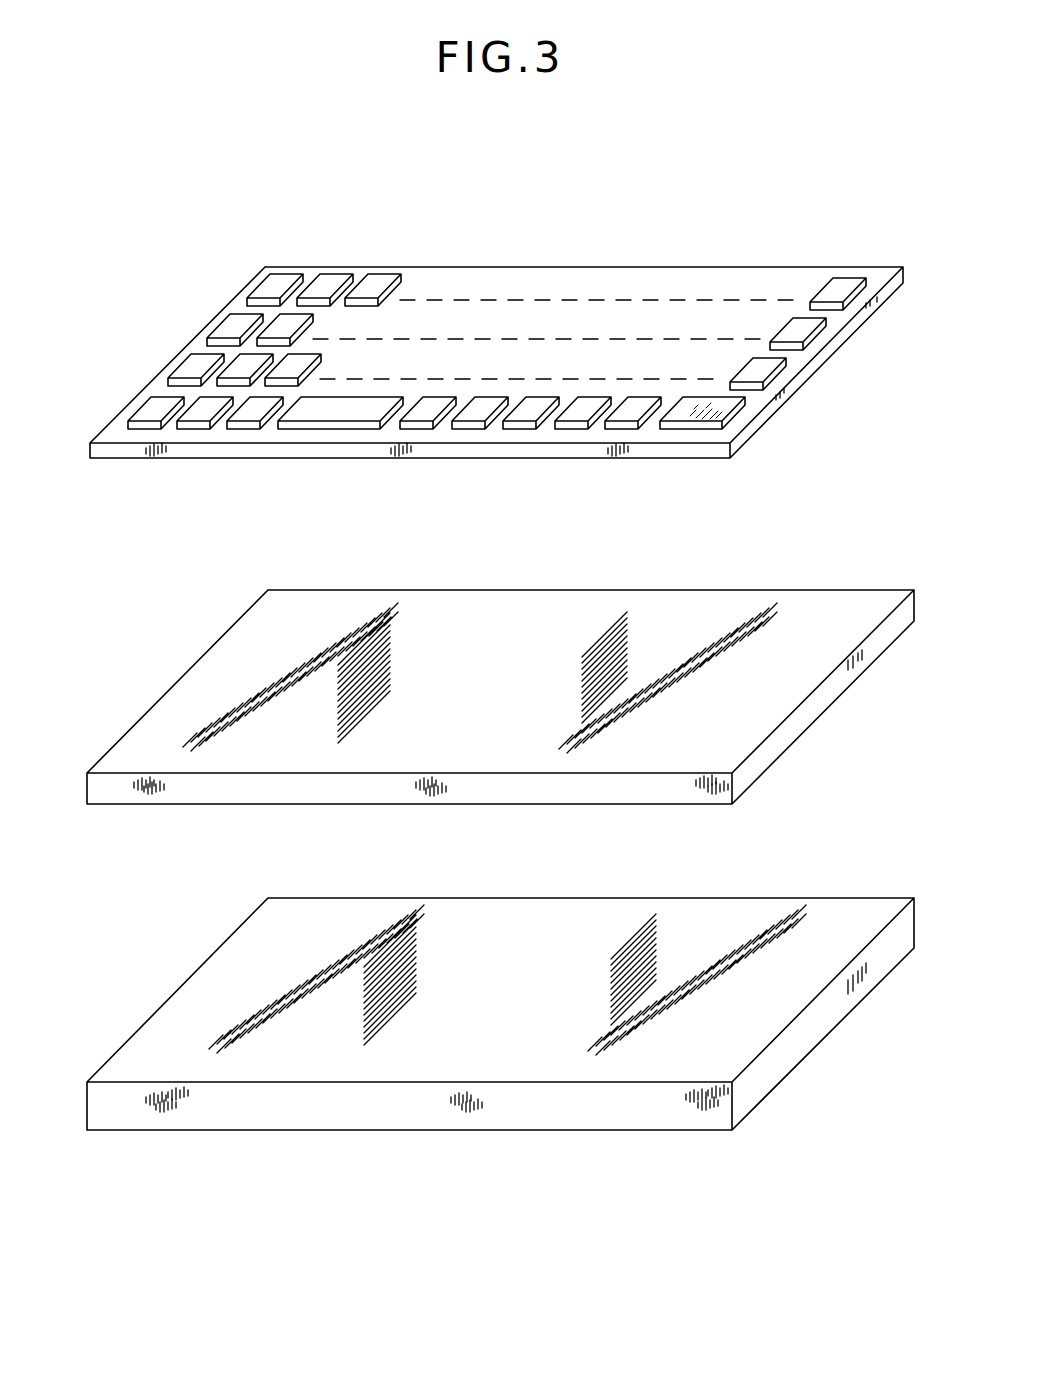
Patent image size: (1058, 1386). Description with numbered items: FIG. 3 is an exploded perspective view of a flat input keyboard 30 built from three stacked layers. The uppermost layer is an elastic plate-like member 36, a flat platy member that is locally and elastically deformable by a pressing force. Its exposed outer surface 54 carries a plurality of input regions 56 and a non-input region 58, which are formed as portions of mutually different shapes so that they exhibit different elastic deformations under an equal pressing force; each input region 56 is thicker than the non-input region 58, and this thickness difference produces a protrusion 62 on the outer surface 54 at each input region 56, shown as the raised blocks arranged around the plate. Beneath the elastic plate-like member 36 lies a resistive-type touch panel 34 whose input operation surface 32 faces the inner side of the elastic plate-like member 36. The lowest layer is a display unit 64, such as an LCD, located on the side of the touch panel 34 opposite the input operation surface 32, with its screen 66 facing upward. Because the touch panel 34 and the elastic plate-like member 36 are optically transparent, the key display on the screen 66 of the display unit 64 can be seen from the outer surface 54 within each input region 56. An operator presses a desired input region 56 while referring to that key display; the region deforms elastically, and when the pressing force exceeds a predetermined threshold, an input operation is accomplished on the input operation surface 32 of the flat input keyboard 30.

The flat input keyboard 30 is at (686, 191).
The input operation surface 32 is at (835, 607).
The touch panel 34 is at (793, 732).
The elastic plate-like member 36 is at (530, 268).
The outer surface 54 is at (785, 278).
The input regions 56 is at (282, 327).
The non-input region 58 is at (115, 432).
The protrusion 62 is at (325, 405).
The display unit 64 is at (522, 1132).
The screen 66 is at (813, 920).